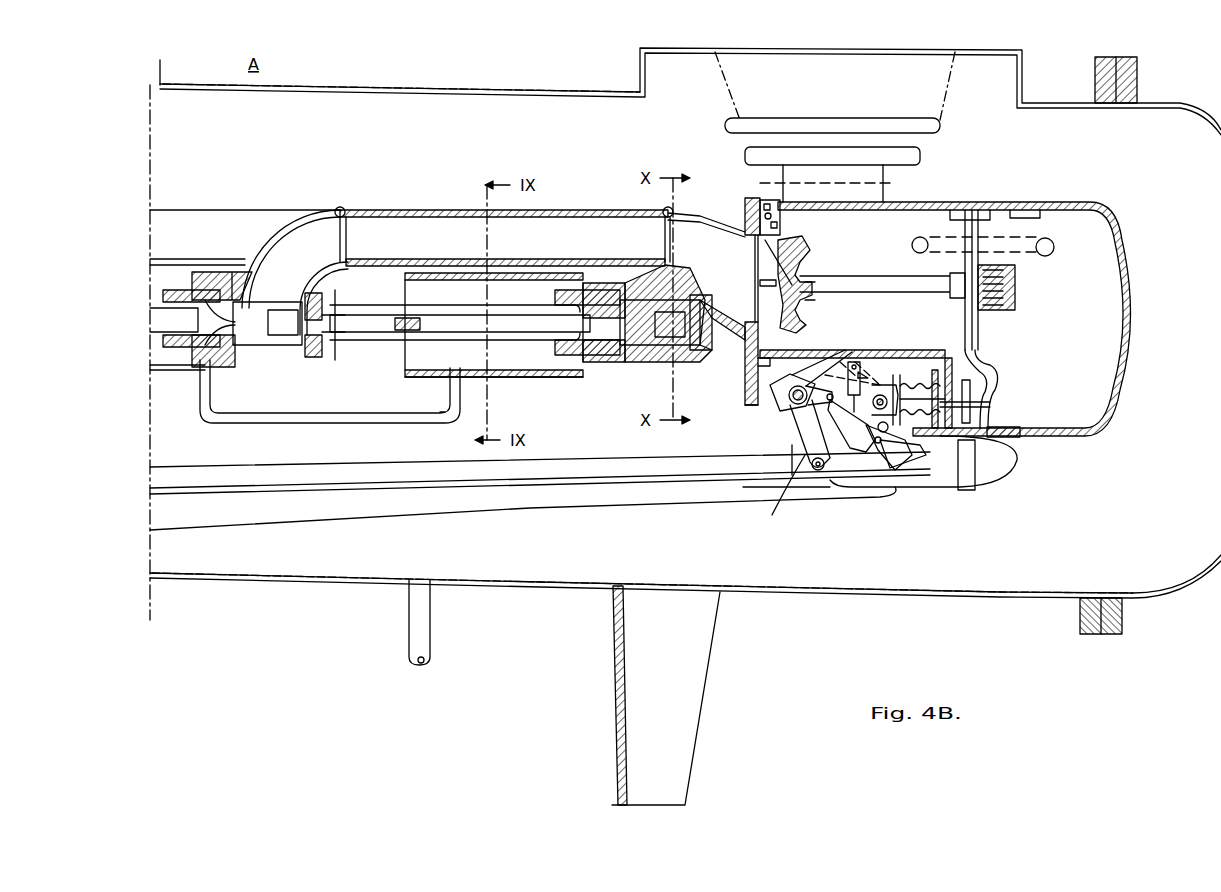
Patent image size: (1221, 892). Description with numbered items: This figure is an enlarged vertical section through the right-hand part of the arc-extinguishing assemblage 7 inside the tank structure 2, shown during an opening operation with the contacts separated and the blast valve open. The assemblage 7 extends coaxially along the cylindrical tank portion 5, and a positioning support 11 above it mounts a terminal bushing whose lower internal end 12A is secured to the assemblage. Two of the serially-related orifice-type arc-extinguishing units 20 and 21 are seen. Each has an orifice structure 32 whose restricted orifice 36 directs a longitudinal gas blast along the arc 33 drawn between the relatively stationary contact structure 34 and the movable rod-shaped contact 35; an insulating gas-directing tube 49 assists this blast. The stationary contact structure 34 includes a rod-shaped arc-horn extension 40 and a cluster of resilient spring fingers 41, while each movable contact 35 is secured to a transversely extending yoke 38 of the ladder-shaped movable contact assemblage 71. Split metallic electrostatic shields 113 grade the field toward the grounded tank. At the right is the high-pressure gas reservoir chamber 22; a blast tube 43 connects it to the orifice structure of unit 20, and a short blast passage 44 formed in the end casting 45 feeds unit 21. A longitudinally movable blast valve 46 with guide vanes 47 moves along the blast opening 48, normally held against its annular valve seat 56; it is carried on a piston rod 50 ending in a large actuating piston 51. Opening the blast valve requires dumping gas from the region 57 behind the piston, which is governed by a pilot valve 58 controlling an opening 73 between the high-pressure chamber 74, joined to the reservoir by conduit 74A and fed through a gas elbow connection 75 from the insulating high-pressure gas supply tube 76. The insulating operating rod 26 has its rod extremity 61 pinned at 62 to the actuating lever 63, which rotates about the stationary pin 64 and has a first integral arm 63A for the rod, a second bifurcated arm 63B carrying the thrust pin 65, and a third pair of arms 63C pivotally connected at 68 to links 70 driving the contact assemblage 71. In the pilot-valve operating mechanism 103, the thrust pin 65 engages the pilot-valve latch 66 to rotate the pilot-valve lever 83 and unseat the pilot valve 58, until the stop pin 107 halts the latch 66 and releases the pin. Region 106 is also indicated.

The tank structure 2 is at (800, 590).
The cylindrical tank portion 5 is at (518, 588).
The arc-extinguishing assemblage 7 is at (245, 271).
The positioning support 11 is at (1022, 75).
The lower internal end of terminal bushing 12A is at (942, 122).
The arc-extinguishing unit 20 is at (330, 391).
The arc-extinguishing unit 21 is at (611, 341).
The high-pressure gas reservoir chamber 22 is at (912, 202).
The insulating operating rod 26 is at (242, 468).
The orifice structure 32 is at (170, 290).
The arc 33 is at (200, 366).
The relatively stationary contact structure 34 is at (292, 340).
The movable rod-shaped contact 35 is at (165, 318).
The restricted orifice 36 is at (225, 280).
The transversely extending yoke 38 is at (420, 324).
The rod-shaped arc-horn extension 40 is at (282, 312).
The resilient spring fingers 41 is at (250, 303).
The blast tube 43 is at (408, 212).
The blast passage 44 is at (668, 313).
The end casting 45 is at (712, 344).
The blast valve 46 is at (810, 253).
The guide vanes 47 is at (782, 256).
The blast opening 48 is at (752, 250).
The insulating gas-directing tube 49 is at (420, 378).
The piston rod 50 is at (866, 280).
The actuating piston 51 is at (960, 310).
The annular valve seat 56 is at (781, 226).
The region back of piston 57 is at (990, 368).
The pilot valve 58 is at (971, 388).
The rod extremity 61 is at (792, 458).
The pin 62 is at (824, 470).
The actuating lever 63 is at (790, 414).
The first integral arm 63A is at (778, 493).
The second bifurcated arm 63B is at (808, 418).
The third pair of arms 63C is at (860, 352).
The stationary pin 64 is at (742, 385).
The thrust pin 65 is at (812, 388).
The pilot-valve latch 66 is at (849, 426).
The pivotal connection 68 is at (845, 348).
The link 70 is at (818, 304).
The ladder-shaped movable contact assemblage 71 is at (478, 318).
The opening 73 is at (985, 410).
The high-pressure chamber 74 is at (996, 280).
The conduit 74A is at (1033, 258).
The gas elbow connection 75 is at (1020, 480).
The high-pressure gas supply tube 76 is at (480, 518).
The pilot-valve lever 83 is at (898, 448).
The pilot-valve operating mechanism 103 is at (871, 446).
The compartment 106 is at (990, 532).
The stop pin 107 is at (880, 388).
The split metallic electrostatic shield 113 is at (378, 415).